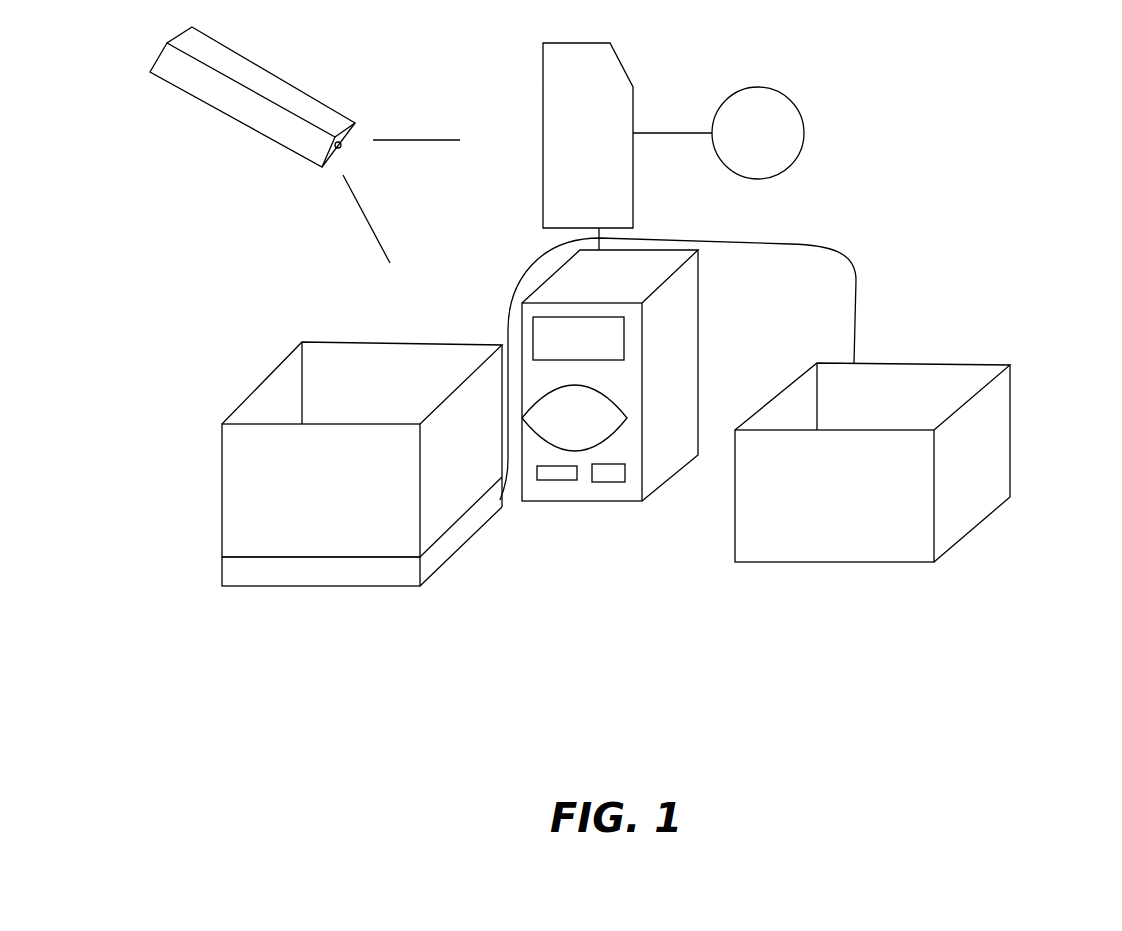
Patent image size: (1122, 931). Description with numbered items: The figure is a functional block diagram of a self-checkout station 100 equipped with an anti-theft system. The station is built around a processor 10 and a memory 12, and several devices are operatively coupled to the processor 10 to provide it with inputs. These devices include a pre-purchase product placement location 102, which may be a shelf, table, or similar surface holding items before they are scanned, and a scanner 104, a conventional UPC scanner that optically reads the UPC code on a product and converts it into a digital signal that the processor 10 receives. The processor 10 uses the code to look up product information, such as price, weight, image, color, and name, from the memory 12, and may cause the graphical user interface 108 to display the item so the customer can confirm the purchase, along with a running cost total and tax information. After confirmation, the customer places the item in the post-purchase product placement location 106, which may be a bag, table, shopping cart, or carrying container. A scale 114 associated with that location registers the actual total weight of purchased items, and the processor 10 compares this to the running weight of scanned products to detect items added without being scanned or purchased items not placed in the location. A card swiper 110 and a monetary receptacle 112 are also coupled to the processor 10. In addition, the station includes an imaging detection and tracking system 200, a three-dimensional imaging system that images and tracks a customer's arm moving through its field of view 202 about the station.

The processor 10 is at (543, 108).
The memory 12 is at (792, 97).
The self-checkout station 100 is at (1022, 157).
The pre-purchase product placement location 102 is at (1010, 443).
The scanner 104 is at (613, 427).
The post-purchase product placement location 106 is at (222, 512).
The graphical user interface 108 is at (627, 340).
The card swiper 110 is at (552, 477).
The monetary receptacle 112 is at (608, 472).
The scale 114 is at (393, 577).
The imaging detection and tracking system 200 is at (287, 152).
The field of view 202 is at (326, 269).